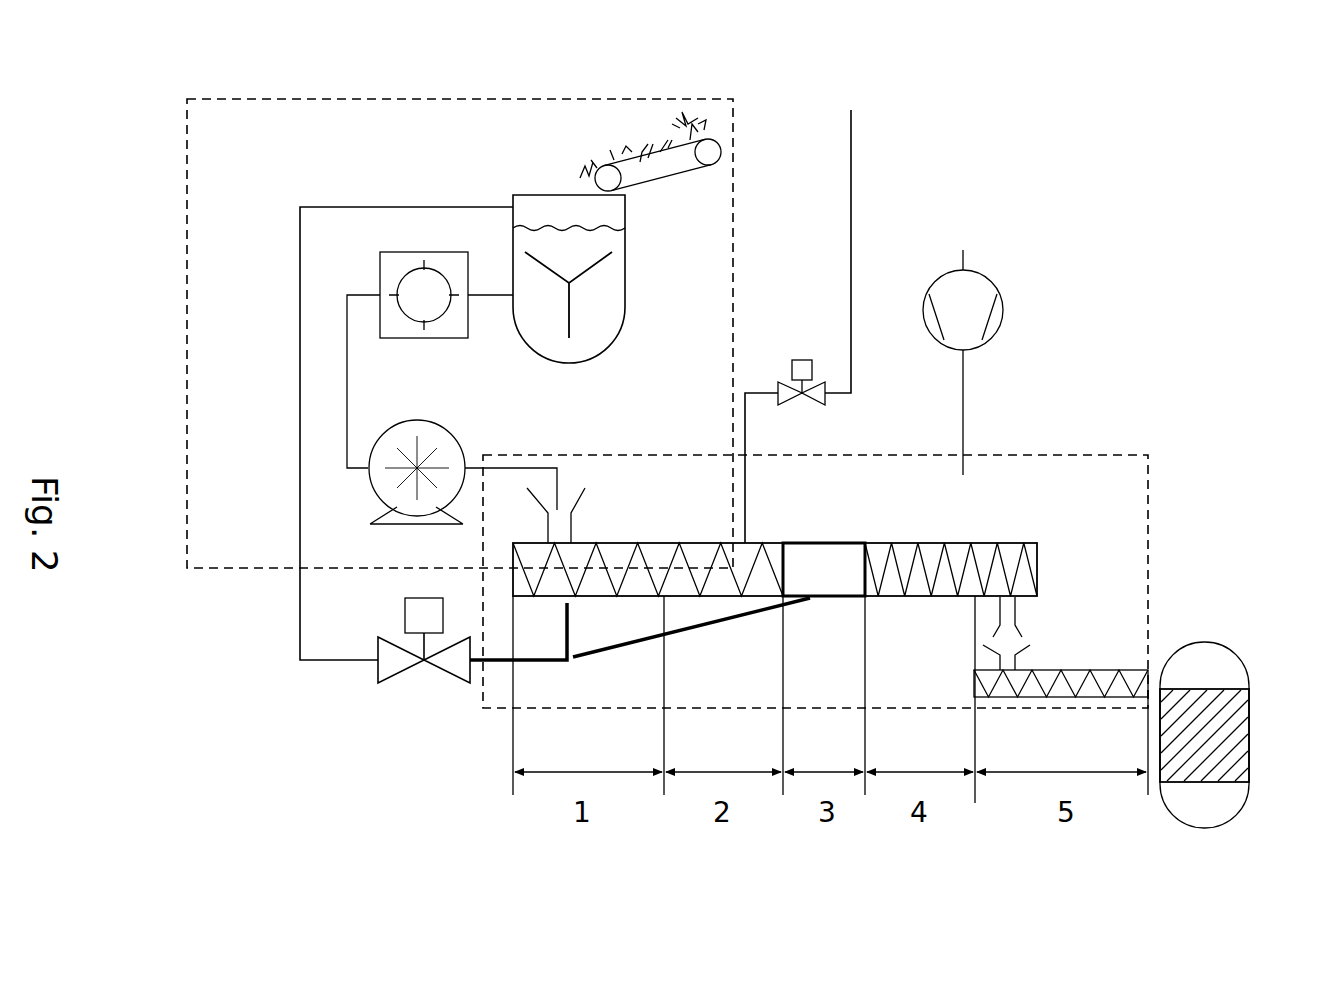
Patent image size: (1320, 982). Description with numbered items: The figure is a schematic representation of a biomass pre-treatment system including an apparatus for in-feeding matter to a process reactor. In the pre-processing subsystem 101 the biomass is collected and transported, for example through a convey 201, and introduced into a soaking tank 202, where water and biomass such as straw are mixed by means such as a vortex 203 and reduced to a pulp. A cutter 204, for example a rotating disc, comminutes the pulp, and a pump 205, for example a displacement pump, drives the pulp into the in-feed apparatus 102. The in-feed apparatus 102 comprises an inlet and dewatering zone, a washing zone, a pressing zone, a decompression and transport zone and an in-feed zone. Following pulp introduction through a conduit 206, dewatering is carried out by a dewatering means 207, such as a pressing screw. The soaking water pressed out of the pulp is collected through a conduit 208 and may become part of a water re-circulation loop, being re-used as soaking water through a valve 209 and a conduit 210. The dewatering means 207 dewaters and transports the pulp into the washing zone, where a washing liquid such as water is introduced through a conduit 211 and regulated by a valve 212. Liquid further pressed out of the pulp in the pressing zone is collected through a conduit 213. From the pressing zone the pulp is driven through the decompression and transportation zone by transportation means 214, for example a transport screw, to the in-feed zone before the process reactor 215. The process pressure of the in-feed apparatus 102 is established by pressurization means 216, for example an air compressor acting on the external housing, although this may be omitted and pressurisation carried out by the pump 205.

The pre-processing subsystem 101 is at (518, 108).
The in-feed apparatus 102 is at (1060, 478).
The convey 201 is at (662, 163).
The soaking tank 202 is at (620, 270).
The vortex 203 is at (575, 305).
The cutter 204 is at (453, 325).
The pump 205 is at (393, 485).
The conduit 206 is at (563, 500).
The dewatering means 207 is at (652, 580).
The conduit 208 is at (565, 648).
The valve 209 is at (415, 670).
The conduit 210 is at (300, 623).
The conduit 211 is at (747, 508).
The valve 212 is at (802, 358).
The conduit 213 is at (722, 627).
The transportation means 214 is at (930, 597).
The process reactor 215 is at (1222, 668).
The pressurization means 216 is at (970, 303).